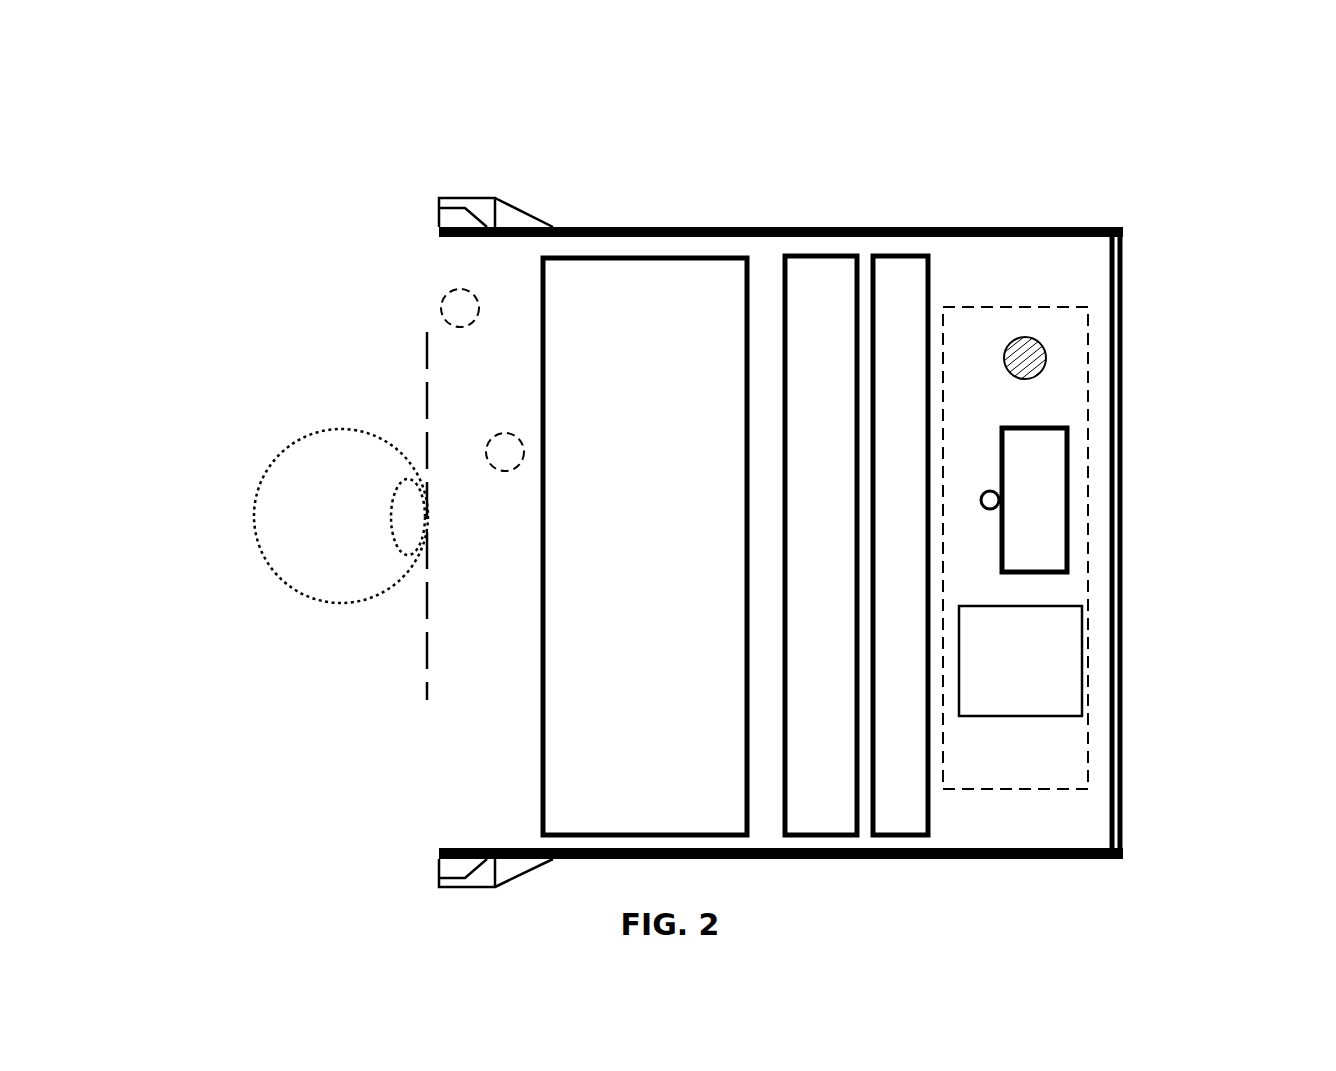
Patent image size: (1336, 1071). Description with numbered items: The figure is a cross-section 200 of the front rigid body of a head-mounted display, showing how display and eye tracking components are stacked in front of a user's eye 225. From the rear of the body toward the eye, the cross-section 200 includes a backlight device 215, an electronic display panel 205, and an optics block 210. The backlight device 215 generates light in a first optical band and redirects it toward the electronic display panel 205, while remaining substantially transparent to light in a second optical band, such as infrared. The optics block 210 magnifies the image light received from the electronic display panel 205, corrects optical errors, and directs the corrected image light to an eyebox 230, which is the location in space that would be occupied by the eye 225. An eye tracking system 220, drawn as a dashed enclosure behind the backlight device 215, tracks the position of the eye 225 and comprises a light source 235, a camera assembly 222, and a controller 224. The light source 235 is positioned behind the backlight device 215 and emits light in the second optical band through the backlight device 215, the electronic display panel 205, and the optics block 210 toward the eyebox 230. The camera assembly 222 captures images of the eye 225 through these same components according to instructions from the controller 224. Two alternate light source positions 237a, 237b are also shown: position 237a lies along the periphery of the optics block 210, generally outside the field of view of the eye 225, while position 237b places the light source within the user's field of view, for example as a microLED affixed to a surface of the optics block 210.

The cross-section 200 is at (137, 33).
The electronic display panel 205 is at (853, 258).
The optics block 210 is at (573, 307).
The backlight device 215 is at (925, 355).
The eye tracking system 220 is at (1040, 789).
The camera assembly 222 is at (1057, 572).
The controller 224 is at (1003, 683).
The eye 225 is at (341, 516).
The eyebox 230 is at (427, 443).
The light source 235 is at (1025, 380).
The position 237a is at (441, 305).
The position 237b is at (509, 471).